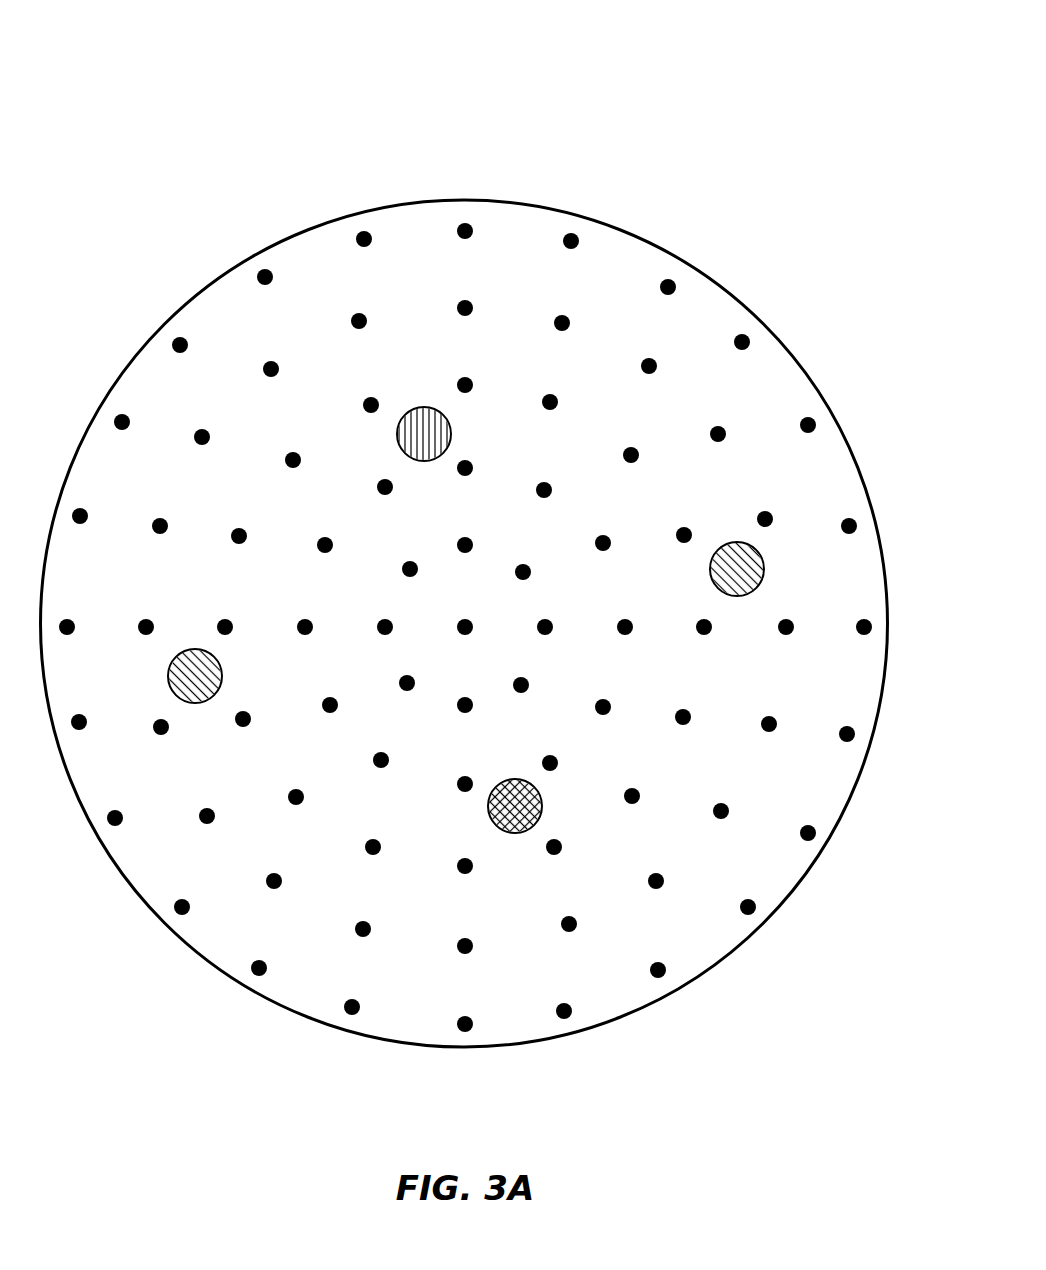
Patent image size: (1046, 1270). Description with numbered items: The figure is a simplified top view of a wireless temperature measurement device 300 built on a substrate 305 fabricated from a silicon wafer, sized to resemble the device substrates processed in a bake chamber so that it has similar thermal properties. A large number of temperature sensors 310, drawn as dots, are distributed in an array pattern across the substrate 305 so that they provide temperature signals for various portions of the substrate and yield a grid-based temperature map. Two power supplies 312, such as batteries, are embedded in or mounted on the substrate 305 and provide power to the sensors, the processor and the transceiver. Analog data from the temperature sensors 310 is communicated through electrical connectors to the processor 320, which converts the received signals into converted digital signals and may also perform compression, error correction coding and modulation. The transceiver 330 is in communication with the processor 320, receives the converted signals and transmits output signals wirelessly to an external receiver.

The wireless temperature measurement device 300 is at (684, 86).
The substrate 305 is at (714, 966).
The temperature sensors 310 is at (571, 241).
The power supplies 312 is at (746, 595).
The processor 320 is at (499, 834).
The transceiver 330 is at (422, 407).